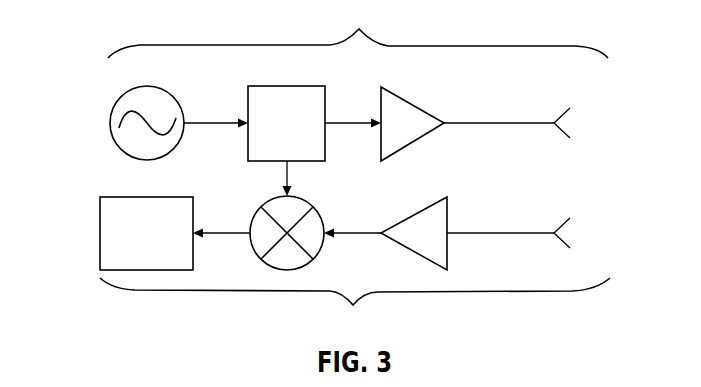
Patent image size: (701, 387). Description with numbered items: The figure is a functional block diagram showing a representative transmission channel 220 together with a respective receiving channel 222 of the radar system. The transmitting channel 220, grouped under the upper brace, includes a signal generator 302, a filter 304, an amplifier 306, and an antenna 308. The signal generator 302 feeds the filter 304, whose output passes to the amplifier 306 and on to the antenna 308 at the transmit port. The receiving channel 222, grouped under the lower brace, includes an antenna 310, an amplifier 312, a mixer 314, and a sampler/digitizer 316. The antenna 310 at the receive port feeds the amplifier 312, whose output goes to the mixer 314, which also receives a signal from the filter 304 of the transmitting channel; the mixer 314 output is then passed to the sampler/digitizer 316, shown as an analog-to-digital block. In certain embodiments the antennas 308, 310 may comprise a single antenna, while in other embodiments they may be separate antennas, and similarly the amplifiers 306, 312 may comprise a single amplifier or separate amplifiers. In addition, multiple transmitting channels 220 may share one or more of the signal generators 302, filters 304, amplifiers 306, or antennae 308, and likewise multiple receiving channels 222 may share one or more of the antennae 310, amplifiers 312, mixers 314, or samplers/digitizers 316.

The transmission channel 220 is at (358, 29).
The receiving channel 222 is at (355, 308).
The signal generator 302 is at (112, 127).
The filter 304 is at (286, 86).
The amplifier 306 is at (415, 100).
The antenna 308 is at (562, 132).
The antenna 310 is at (562, 243).
The amplifier 312 is at (448, 215).
The mixer 314 is at (303, 201).
The sampler/digitizer 316 is at (147, 197).